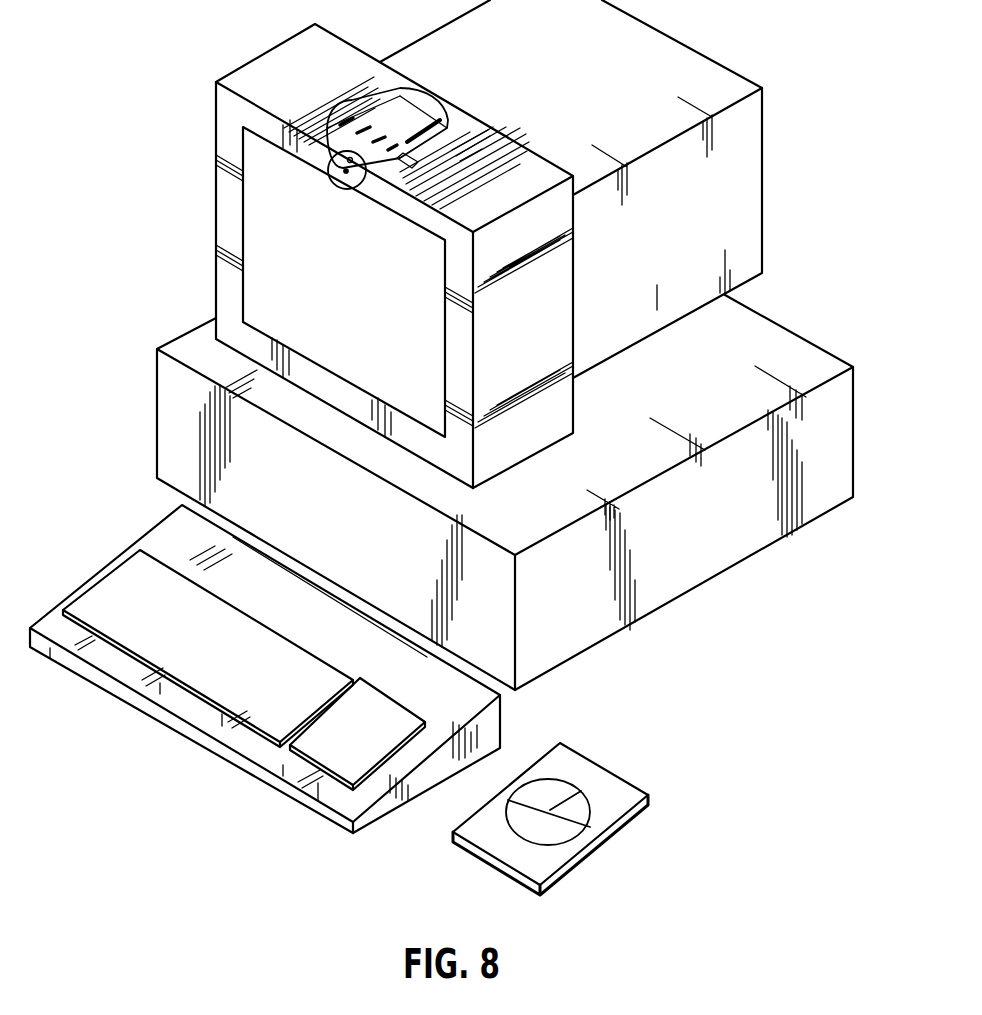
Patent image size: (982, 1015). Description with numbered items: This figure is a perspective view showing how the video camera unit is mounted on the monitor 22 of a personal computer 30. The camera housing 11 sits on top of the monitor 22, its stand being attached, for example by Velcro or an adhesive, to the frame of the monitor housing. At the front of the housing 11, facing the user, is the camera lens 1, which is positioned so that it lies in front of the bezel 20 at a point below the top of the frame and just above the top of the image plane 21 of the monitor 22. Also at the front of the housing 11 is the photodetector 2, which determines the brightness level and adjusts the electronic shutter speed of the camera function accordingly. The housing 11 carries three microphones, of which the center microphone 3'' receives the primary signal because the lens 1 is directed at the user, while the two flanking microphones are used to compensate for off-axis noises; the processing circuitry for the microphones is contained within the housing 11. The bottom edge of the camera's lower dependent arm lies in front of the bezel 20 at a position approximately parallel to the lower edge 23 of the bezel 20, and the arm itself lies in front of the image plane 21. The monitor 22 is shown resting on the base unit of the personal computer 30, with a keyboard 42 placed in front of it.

The camera lens 1 is at (344, 173).
The photodetector 2 is at (351, 163).
The center microphone 3'' is at (370, 77).
The camera housing 11 is at (410, 107).
The bezel 20 is at (458, 285).
The image plane 21 is at (348, 297).
The monitor 22 is at (676, 242).
The lower edge of the bezel 23 is at (433, 222).
The personal computer 30 is at (823, 302).
The keyboard 42 is at (265, 776).